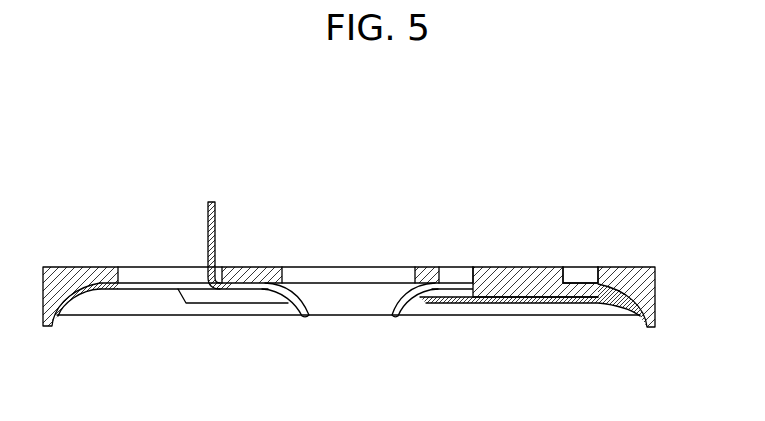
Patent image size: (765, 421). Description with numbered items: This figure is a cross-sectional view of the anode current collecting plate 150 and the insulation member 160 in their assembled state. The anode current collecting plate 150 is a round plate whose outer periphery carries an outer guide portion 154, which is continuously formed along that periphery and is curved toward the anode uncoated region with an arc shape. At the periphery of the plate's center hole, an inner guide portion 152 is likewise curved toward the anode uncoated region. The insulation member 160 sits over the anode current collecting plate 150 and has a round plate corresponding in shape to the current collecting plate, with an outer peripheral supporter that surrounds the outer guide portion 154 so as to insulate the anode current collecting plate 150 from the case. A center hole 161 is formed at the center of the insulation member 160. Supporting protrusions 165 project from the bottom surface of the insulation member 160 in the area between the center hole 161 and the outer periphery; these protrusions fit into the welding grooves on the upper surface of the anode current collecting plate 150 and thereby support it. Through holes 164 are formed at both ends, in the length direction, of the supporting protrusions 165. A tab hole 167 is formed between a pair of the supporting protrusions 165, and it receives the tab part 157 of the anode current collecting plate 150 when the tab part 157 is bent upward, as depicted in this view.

The anode current collecting plate 150 is at (512, 306).
The inner guide portion 152 is at (292, 306).
The outer guide portion 154 is at (97, 297).
The tab part 157 is at (217, 223).
The insulation member 160 is at (655, 267).
The center hole 161 is at (361, 266).
The through holes 164 is at (580, 267).
The supporting protrusions 165 is at (463, 292).
The tab hole 167 is at (148, 266).